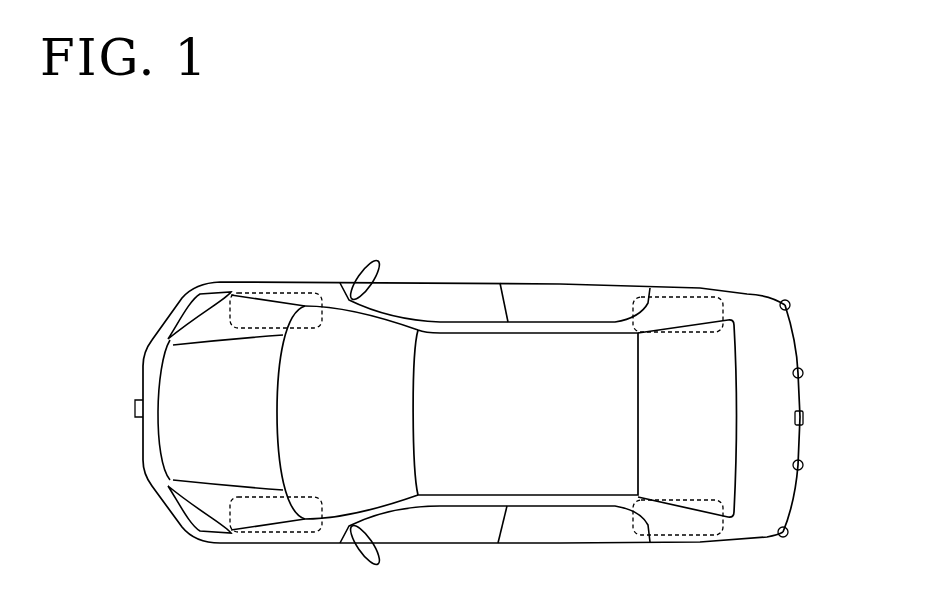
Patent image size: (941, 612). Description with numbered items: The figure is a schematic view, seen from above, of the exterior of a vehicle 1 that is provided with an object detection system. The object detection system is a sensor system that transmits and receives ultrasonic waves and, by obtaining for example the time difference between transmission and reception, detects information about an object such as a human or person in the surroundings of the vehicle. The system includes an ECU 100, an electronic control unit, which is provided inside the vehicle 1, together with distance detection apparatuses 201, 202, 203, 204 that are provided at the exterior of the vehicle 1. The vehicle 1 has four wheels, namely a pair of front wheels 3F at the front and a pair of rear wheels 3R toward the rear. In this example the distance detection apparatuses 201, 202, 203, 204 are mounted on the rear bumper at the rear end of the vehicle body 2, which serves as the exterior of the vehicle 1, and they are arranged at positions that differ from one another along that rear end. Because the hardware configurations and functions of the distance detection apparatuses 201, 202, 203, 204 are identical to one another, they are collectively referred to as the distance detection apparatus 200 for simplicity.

The vehicle 1 is at (533, 383).
The ECU 100 is at (533, 383).
The vehicle body 2 is at (747, 298).
The front wheels 3F is at (275, 292).
The rear wheels 3R is at (675, 297).
The distance detection apparatus 200 is at (855, 390).
The distance detection apparatus 201 is at (789, 532).
The distance detection apparatus 202 is at (803, 466).
The distance detection apparatus 203 is at (803, 372).
The distance detection apparatus 204 is at (790, 302).